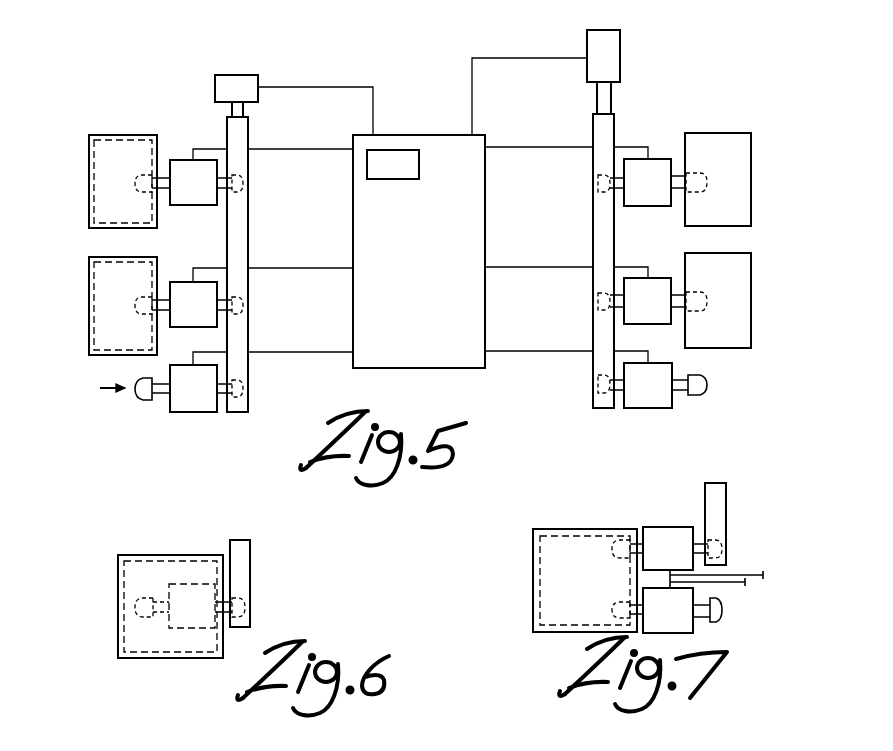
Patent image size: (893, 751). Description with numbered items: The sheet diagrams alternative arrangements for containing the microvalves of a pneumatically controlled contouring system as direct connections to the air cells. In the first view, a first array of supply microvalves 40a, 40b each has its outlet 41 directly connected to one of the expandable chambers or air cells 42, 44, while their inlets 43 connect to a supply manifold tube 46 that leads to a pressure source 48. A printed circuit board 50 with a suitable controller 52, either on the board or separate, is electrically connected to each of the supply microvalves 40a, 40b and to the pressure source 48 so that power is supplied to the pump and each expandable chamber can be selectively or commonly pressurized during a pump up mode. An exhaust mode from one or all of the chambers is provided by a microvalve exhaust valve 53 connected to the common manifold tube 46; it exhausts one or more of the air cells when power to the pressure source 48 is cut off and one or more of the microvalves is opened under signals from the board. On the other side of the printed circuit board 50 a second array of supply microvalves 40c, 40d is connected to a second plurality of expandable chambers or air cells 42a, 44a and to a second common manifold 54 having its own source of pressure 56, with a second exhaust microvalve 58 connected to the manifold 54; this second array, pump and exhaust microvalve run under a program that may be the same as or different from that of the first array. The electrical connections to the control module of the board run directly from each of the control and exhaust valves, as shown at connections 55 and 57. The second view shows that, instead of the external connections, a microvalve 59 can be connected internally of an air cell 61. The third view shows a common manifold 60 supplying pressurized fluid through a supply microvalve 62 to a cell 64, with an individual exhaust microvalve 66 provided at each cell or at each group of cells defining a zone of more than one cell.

In FIG. 5, the supply microvalve 40a is at (178, 167).
In FIG. 5, the supply microvalve 40b is at (182, 290).
In FIG. 5, the supply microvalve 40c is at (655, 166).
In FIG. 5, the supply microvalve 40d is at (658, 288).
In FIG. 5, the outlet 41 is at (160, 176).
In FIG. 5, the expandable chamber or air cell 42 is at (100, 202).
In FIG. 5, the expandable chamber or air cell 42a is at (742, 146).
In FIG. 5, the inlet 43 is at (221, 178).
In FIG. 5, the expandable chamber or air cell 44 is at (103, 306).
In FIG. 5, the expandable chamber or air cell 44a is at (725, 335).
In FIG. 5, the supply manifold tube 46 is at (237, 233).
In FIG. 5, the pressure source 48 is at (252, 78).
In FIG. 5, the printed circuit board 50 is at (437, 356).
In FIG. 5, the controller 52 is at (404, 152).
In FIG. 5, the exhaust microvalve 53 is at (185, 402).
In FIG. 5, the second common manifold 54 is at (593, 211).
In FIG. 5, the connection 55 is at (306, 149).
In FIG. 5, the source of pressure 56 is at (621, 55).
In FIG. 5, the connection 57 is at (541, 58).
In FIG. 5, the second exhaust microvalve 58 is at (660, 398).
In FIG. 6, the microvalve 59 is at (192, 590).
In FIG. 7, the common manifold 60 is at (718, 502).
In FIG. 6, the air cell 61 is at (150, 565).
In FIG. 7, the supply microvalve 62 is at (677, 530).
In FIG. 7, the cell 64 is at (555, 577).
In FIG. 7, the individual exhaust microvalve 66 is at (688, 625).